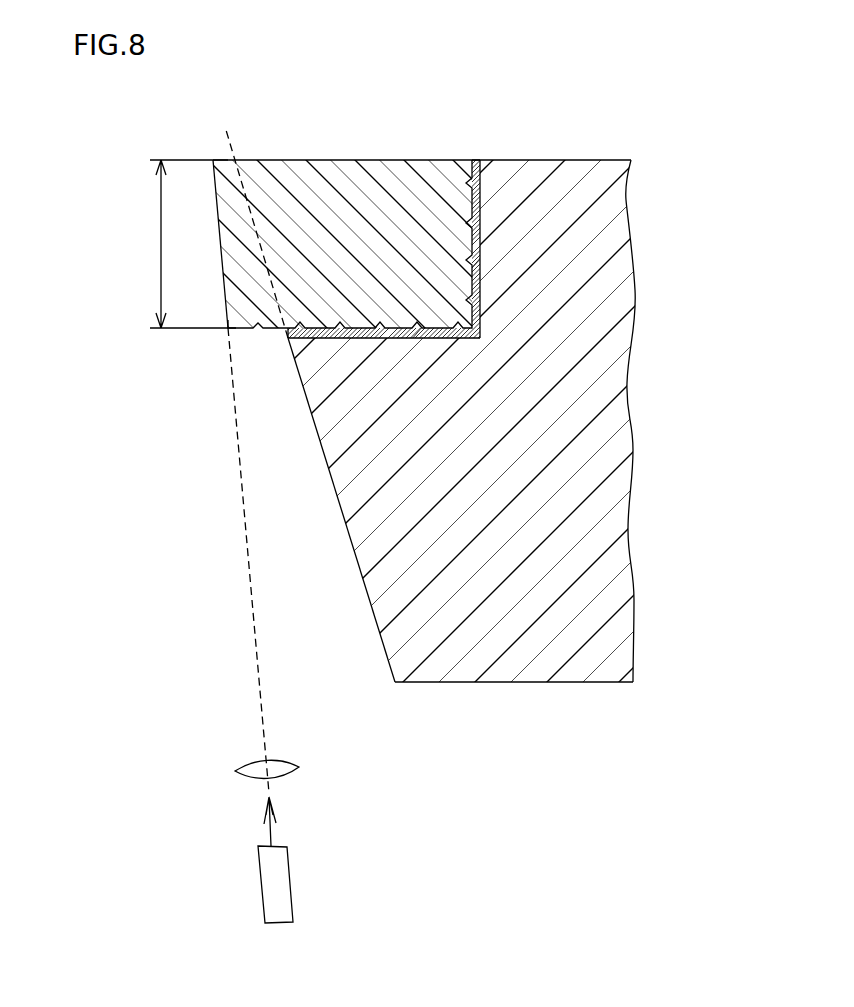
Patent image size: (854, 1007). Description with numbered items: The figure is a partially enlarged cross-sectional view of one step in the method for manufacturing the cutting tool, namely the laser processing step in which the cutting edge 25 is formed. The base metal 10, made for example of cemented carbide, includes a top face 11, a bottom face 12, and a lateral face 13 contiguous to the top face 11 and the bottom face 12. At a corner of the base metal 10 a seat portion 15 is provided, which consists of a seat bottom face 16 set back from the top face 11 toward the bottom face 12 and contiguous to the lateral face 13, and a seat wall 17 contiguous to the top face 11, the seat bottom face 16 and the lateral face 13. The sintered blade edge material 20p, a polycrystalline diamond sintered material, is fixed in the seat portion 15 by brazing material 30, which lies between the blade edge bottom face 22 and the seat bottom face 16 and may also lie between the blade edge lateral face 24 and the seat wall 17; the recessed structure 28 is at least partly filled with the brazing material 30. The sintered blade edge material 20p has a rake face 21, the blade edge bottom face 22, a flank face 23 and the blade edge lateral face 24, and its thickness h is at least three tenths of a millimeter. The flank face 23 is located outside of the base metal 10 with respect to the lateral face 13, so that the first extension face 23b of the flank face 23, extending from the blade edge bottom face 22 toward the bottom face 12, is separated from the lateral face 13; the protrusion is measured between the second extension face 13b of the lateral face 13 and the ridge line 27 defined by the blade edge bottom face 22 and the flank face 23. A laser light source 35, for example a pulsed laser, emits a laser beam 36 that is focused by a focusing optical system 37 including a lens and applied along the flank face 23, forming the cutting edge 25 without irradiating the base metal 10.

The base metal 10 is at (599, 452).
The top face 11 is at (545, 160).
The bottom face 12 is at (525, 683).
The lateral face 13 is at (366, 591).
The second extension face 13b is at (233, 140).
The seat portion 15 is at (507, 271).
The seat bottom face 16 is at (413, 339).
The seat wall 17 is at (481, 300).
The sintered blade edge material 20p is at (310, 190).
The rake face 21 is at (401, 160).
The blade edge bottom face 22 is at (243, 329).
The flank face 23 is at (220, 246).
The first extension face 23b is at (244, 596).
The blade edge lateral face 24 is at (481, 205).
The cutting edge 25 is at (213, 160).
The ridge line 27 is at (228, 329).
The recessed structure 28 is at (481, 262).
The brazing material 30 is at (472, 160).
The laser light source 35 is at (292, 887).
The laser beam 36 is at (273, 833).
The focusing optical system 37 is at (299, 767).
The thickness h is at (183, 244).